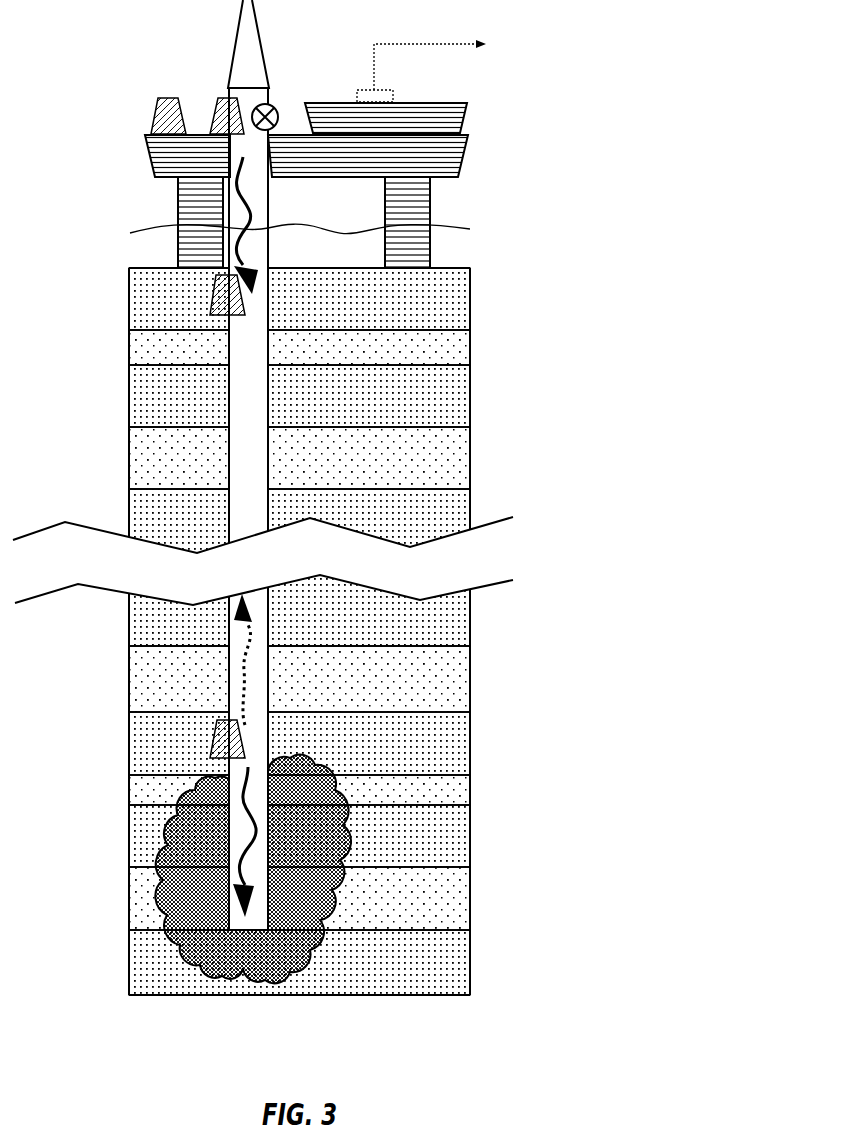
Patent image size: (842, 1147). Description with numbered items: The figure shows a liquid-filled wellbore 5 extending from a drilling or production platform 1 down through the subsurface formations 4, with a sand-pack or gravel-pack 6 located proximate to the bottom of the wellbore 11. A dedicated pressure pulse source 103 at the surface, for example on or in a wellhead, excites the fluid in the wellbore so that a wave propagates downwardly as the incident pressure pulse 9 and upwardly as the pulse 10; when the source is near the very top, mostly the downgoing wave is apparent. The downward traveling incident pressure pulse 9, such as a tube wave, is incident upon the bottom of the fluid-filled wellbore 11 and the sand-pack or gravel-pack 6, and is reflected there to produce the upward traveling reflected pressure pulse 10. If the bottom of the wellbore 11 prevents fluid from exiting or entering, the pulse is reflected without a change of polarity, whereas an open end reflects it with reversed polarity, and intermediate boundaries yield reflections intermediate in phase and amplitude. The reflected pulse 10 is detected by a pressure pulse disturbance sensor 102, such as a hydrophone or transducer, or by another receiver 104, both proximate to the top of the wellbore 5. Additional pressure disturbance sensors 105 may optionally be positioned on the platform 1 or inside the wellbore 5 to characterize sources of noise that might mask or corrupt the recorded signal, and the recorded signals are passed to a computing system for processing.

The drilling or production platform 1 is at (458, 103).
The subsurface formations 4 is at (326, 631).
The wellbore 5 is at (270, 425).
The sand-pack or gravel-pack 6 is at (347, 870).
The downward traveling incident pressure pulse 9 is at (223, 195).
The upward traveling reflected pressure pulse 10 is at (248, 632).
The bottom of the fluid-filled wellbore 11 is at (265, 923).
The pressure pulse disturbance sensor 102 is at (222, 99).
The pressure pulse source 103 is at (273, 103).
The receiver 104 is at (150, 130).
The pressure disturbance sensor 105 is at (210, 302).